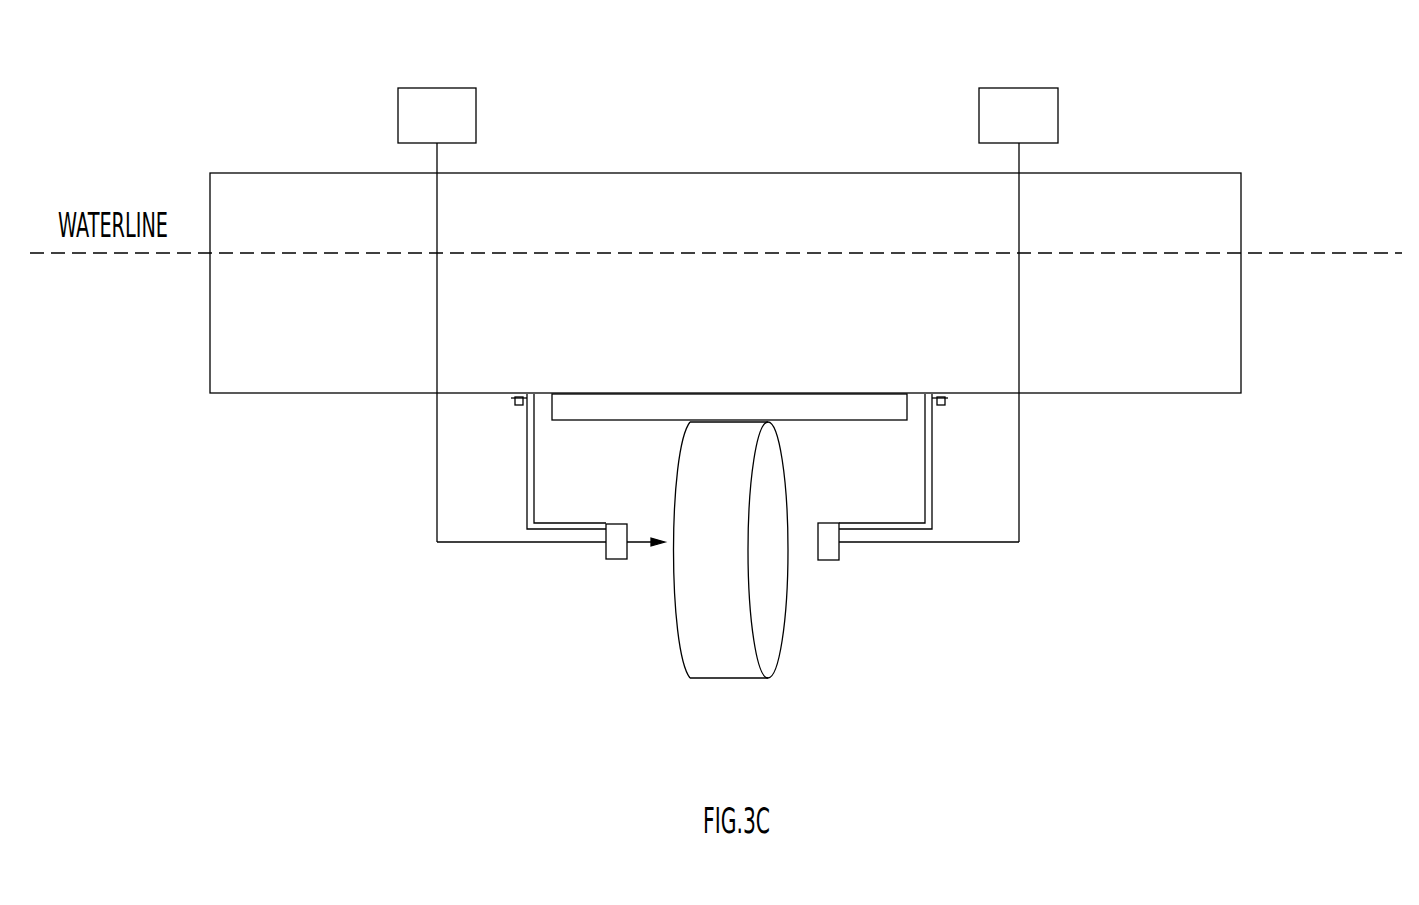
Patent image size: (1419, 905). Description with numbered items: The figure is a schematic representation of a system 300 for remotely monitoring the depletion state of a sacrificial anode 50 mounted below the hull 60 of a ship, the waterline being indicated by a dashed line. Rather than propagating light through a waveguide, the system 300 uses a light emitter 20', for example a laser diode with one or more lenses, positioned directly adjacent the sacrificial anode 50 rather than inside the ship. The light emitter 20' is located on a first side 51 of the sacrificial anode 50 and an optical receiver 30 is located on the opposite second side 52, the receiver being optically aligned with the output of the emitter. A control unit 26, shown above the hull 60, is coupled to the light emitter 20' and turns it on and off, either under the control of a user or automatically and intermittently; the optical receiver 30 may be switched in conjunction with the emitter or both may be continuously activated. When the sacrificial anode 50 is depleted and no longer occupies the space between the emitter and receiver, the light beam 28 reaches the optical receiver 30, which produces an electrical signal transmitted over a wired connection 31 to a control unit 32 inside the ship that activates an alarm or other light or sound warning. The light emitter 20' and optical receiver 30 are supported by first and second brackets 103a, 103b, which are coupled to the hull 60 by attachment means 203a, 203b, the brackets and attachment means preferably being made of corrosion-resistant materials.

The system 300 is at (895, 33).
The hull 60 is at (740, 335).
The control unit 26 is at (413, 88).
The control unit 32 is at (1020, 88).
The wired connection 31 is at (1019, 510).
The first bracket 103a is at (535, 481).
The second bracket 103b is at (925, 481).
The attachment means 203a is at (516, 405).
The attachment means 203b is at (944, 405).
The light emitter 20' is at (604, 518).
The light beam 28 is at (642, 545).
The optical receiver 30 is at (827, 523).
The sacrificial anode 50 is at (714, 678).
The first side 51 is at (680, 660).
The second side 52 is at (776, 617).